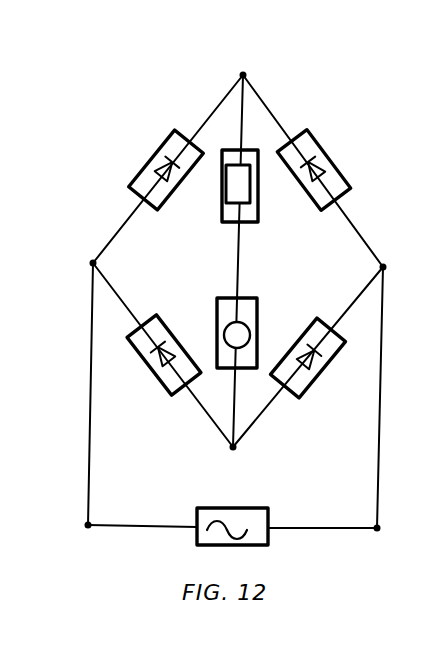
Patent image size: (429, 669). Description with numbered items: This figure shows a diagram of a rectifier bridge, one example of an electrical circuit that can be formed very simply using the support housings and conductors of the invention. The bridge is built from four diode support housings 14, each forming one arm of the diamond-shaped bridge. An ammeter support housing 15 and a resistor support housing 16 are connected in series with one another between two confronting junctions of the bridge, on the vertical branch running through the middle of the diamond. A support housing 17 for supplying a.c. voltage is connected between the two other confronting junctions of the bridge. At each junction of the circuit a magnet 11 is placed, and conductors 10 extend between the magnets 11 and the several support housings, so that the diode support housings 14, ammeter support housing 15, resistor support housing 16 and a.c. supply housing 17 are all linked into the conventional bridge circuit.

The conductor 10 is at (206, 120).
The magnet 11 is at (243, 75).
The diode support housing 14 is at (148, 157).
The ammeter support housing 15 is at (217, 313).
The resistor support housing 16 is at (258, 199).
The support housing for supplying a.c. voltage 17 is at (233, 507).